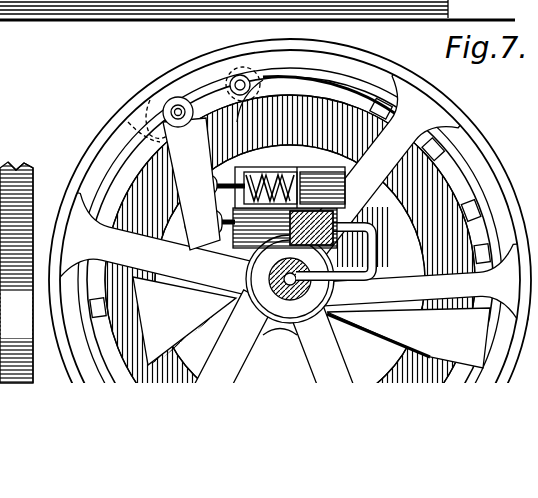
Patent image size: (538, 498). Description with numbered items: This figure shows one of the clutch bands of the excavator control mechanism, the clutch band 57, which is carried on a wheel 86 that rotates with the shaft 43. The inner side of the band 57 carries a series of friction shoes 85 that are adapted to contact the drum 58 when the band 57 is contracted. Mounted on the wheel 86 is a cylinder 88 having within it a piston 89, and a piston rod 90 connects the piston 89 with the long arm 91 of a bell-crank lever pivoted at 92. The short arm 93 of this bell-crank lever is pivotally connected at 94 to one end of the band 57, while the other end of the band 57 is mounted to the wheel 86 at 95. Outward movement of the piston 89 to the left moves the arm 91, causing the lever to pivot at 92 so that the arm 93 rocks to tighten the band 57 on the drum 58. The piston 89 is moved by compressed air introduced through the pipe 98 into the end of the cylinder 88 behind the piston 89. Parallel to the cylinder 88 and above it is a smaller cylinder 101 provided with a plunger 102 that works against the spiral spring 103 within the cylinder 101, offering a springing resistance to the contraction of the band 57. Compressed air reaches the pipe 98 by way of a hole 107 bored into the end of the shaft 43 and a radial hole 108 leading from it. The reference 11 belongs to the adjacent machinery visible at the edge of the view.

The motor housing 11 is at (16, 248).
The shaft 43 is at (281, 293).
The clutch band 57 is at (458, 180).
The drum 58 is at (450, 155).
The friction shoes 85 is at (472, 210).
The wheel 86 is at (195, 78).
The cylinder 88 is at (250, 240).
The piston 89 is at (318, 217).
The piston rod 90 is at (230, 227).
The long arm 91 is at (192, 208).
The pivot 92 is at (176, 98).
The short arm 93 is at (157, 100).
The pivotal connection 94 is at (130, 118).
The band mounting 95 is at (243, 75).
The pipe 98 is at (378, 248).
The smaller cylinder 101 is at (287, 170).
The plunger 102 is at (320, 187).
The spiral spring 103 is at (252, 170).
The hole 107 is at (233, 290).
The radial hole 108 is at (377, 315).